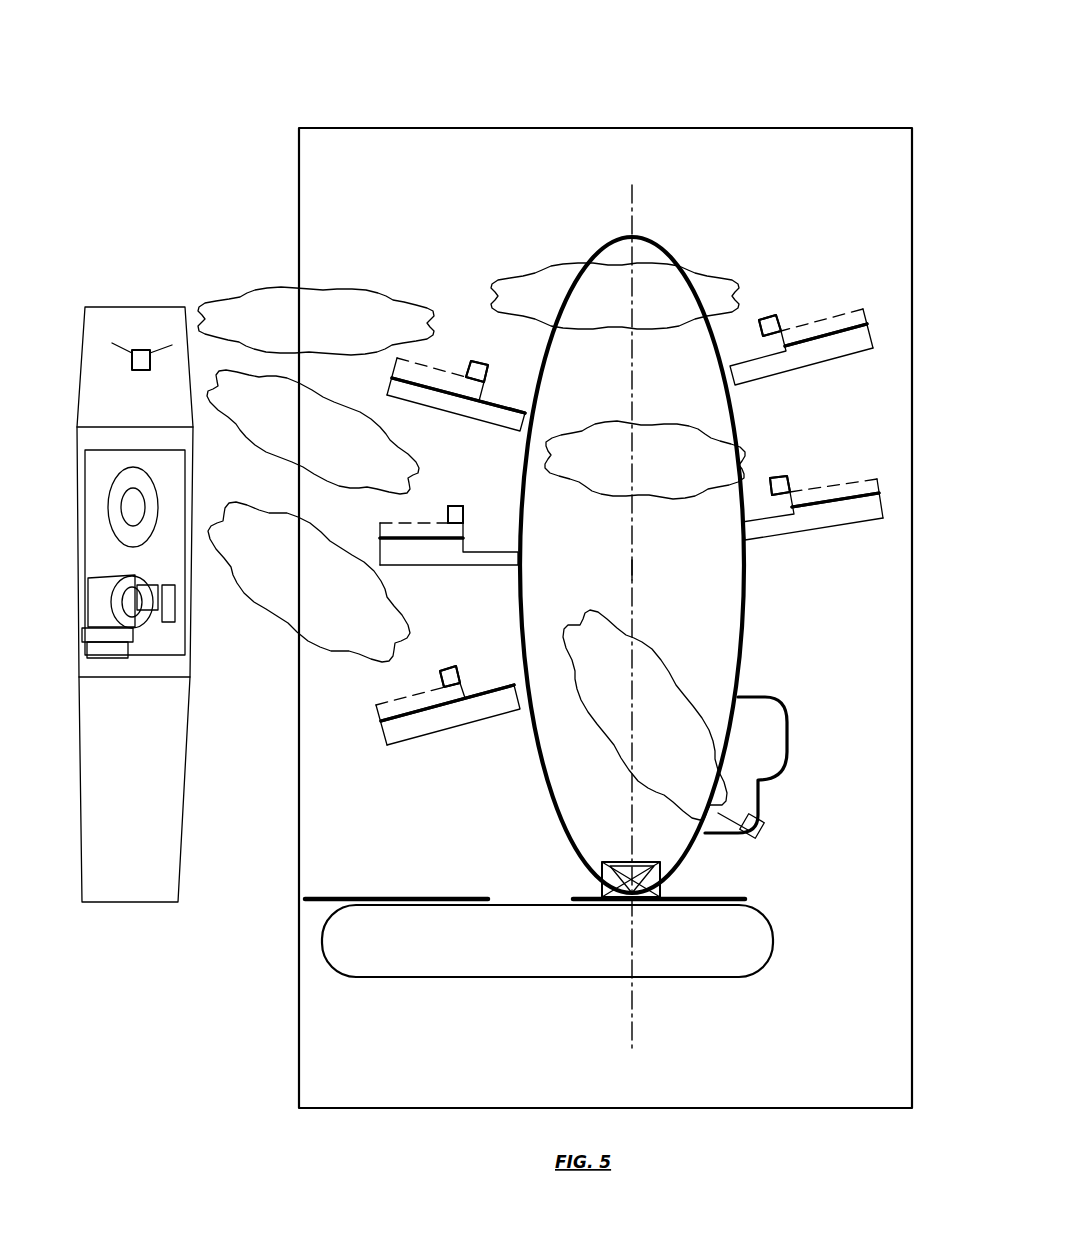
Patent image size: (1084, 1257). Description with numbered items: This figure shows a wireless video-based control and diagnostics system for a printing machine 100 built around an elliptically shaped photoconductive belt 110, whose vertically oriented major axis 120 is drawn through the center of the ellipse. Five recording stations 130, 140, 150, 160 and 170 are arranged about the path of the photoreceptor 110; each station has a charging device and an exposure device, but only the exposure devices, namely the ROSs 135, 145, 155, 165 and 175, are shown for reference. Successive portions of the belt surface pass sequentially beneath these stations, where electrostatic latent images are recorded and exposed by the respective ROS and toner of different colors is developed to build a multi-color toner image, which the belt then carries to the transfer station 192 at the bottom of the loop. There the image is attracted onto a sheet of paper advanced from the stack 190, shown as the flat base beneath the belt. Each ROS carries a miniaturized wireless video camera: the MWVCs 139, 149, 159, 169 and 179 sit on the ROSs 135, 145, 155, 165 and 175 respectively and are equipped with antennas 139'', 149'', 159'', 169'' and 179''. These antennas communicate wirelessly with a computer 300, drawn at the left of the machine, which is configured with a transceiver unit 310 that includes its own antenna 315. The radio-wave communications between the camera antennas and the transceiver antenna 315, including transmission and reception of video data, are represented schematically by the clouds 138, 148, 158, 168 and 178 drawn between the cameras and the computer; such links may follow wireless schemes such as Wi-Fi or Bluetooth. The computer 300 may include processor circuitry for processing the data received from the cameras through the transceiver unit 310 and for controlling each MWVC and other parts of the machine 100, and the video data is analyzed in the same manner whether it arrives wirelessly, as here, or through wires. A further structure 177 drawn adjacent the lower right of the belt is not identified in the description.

The machine 100 is at (605, 561).
The photoconductive belt 110 is at (657, 243).
The major axis 120 is at (638, 574).
The image recording station 130 is at (854, 546).
The ROS 135 is at (812, 509).
The cloud 138 is at (645, 460).
The miniaturized wireless video camera 139 is at (803, 474).
The antenna 139'' is at (777, 468).
The recording station 140 is at (843, 382).
The ROS 145 is at (801, 347).
The cloud 148 is at (615, 296).
The miniaturized wireless video camera 149 is at (792, 315).
The antenna 149'' is at (765, 309).
The recording station 150 is at (458, 426).
The ROS 155 is at (456, 394).
The cloud 158 is at (316, 321).
The miniaturized wireless video camera 159 is at (491, 361).
The antenna 159'' is at (465, 357).
The recording station 160 is at (440, 581).
The ROS 165 is at (449, 544).
The cloud 168 is at (313, 432).
The miniaturized wireless video camera 169 is at (478, 504).
The antenna 169'' is at (453, 501).
The recording station 170 is at (453, 744).
The ROS 175 is at (448, 711).
The support arm 177 is at (783, 742).
The cloud 178 is at (309, 582).
The miniaturized wireless video camera 179 is at (469, 665).
The antenna 179'' is at (449, 660).
The stack 190 is at (384, 899).
The transfer station 192 is at (617, 857).
The computer 300 is at (98, 323).
The transceiver unit 310 is at (147, 370).
The antenna 315 is at (118, 350).